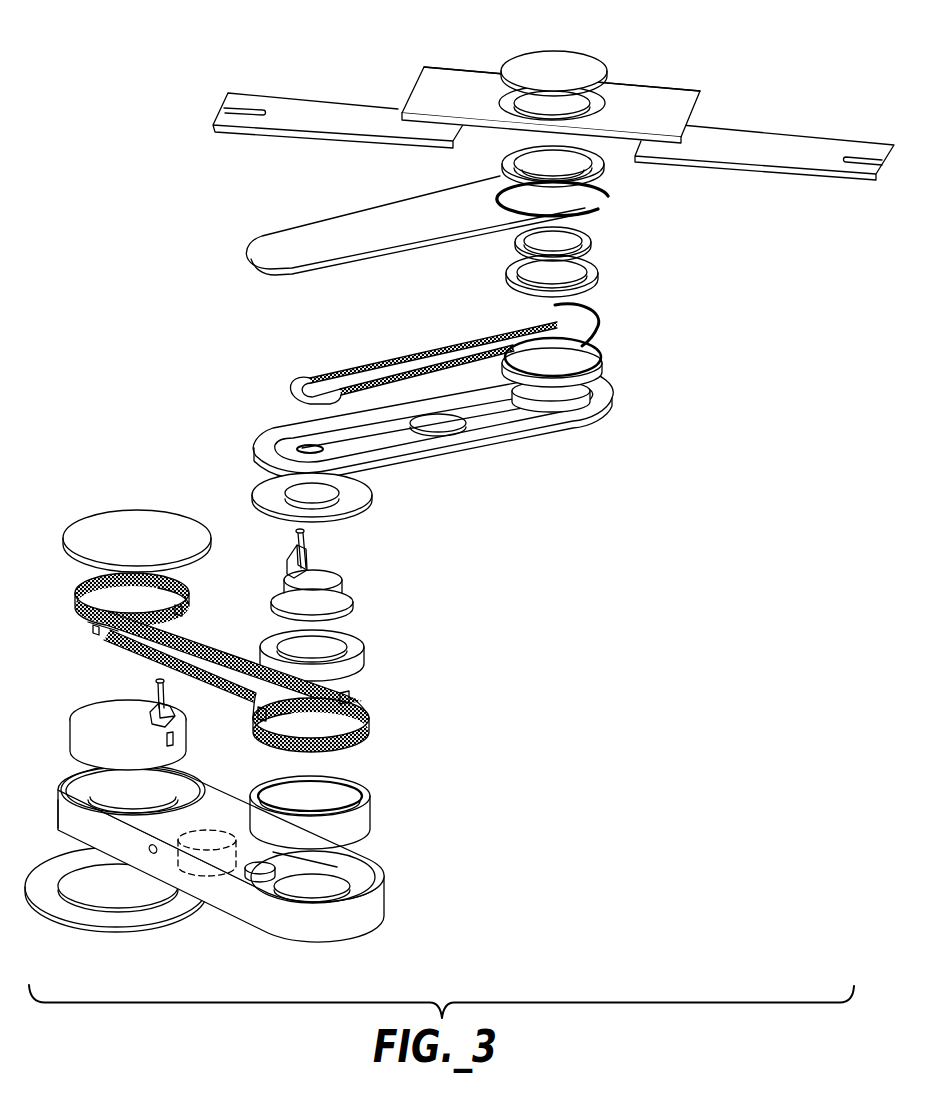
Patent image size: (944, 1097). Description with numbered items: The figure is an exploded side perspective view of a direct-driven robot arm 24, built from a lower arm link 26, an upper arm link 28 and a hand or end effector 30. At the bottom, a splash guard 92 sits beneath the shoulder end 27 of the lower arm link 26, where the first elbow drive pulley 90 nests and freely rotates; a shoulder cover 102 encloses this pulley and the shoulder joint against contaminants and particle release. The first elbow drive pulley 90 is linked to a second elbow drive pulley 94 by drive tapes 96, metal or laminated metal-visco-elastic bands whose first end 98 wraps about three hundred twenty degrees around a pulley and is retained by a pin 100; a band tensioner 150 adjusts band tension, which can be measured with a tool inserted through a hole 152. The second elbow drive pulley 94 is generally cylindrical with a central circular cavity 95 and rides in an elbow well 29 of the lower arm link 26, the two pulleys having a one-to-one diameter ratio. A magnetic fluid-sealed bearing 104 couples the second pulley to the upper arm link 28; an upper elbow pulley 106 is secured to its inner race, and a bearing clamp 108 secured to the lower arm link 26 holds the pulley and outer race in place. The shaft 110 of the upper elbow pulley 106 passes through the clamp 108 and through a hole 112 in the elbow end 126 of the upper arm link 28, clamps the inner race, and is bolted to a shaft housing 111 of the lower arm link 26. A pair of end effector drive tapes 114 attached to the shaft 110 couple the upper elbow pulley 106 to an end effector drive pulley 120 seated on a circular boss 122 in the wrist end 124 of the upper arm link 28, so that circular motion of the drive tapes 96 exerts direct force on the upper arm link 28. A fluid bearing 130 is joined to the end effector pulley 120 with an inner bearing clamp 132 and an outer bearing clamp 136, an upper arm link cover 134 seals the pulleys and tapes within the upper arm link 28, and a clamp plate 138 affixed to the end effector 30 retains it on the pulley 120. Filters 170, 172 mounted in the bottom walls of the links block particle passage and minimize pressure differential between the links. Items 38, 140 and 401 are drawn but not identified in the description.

The arm 24 is at (465, 598).
The lower arm link 26 is at (58, 788).
The shoulder end 27 is at (62, 838).
The upper arm link 28 is at (542, 435).
The elbow well 29 is at (363, 874).
The end effector 30 is at (645, 84).
The mounting plate 38 is at (459, 84).
The first elbow drive pulley 90 is at (72, 712).
The splash guard 92 is at (90, 923).
The second elbow drive pulley 94 is at (370, 813).
The central circular cavity 95 is at (353, 790).
The drive tapes 96 is at (76, 596).
The end 98 is at (83, 628).
The pin 100 is at (178, 604).
The shoulder cover 102 is at (143, 510).
The magnetic fluid-sealed bearing 104 is at (362, 640).
The upper elbow pulley 106 is at (350, 597).
The bearing clamp 108 is at (257, 486).
The shaft 110 is at (350, 578).
The shaft housing 111 is at (306, 886).
The hole 112 is at (305, 446).
The end effector drive tapes 114 is at (388, 357).
The end effector drive pulley 120 is at (603, 362).
The circular boss 122 is at (598, 395).
The wrist end 124 is at (616, 436).
The elbow end 126 is at (278, 403).
The fluid bearing 130 is at (599, 262).
The inner bearing clamp 132 is at (588, 236).
The upper arm link cover 134 is at (262, 226).
The outer bearing clamp 136 is at (502, 158).
The clamp plate 138 is at (556, 64).
The flexure arm 140 is at (327, 122).
The band tensioner 150 is at (153, 710).
The hole 152 is at (146, 868).
The filter 170 is at (443, 423).
The filter 172 is at (214, 893).
The coil spring loop 401 is at (590, 346).